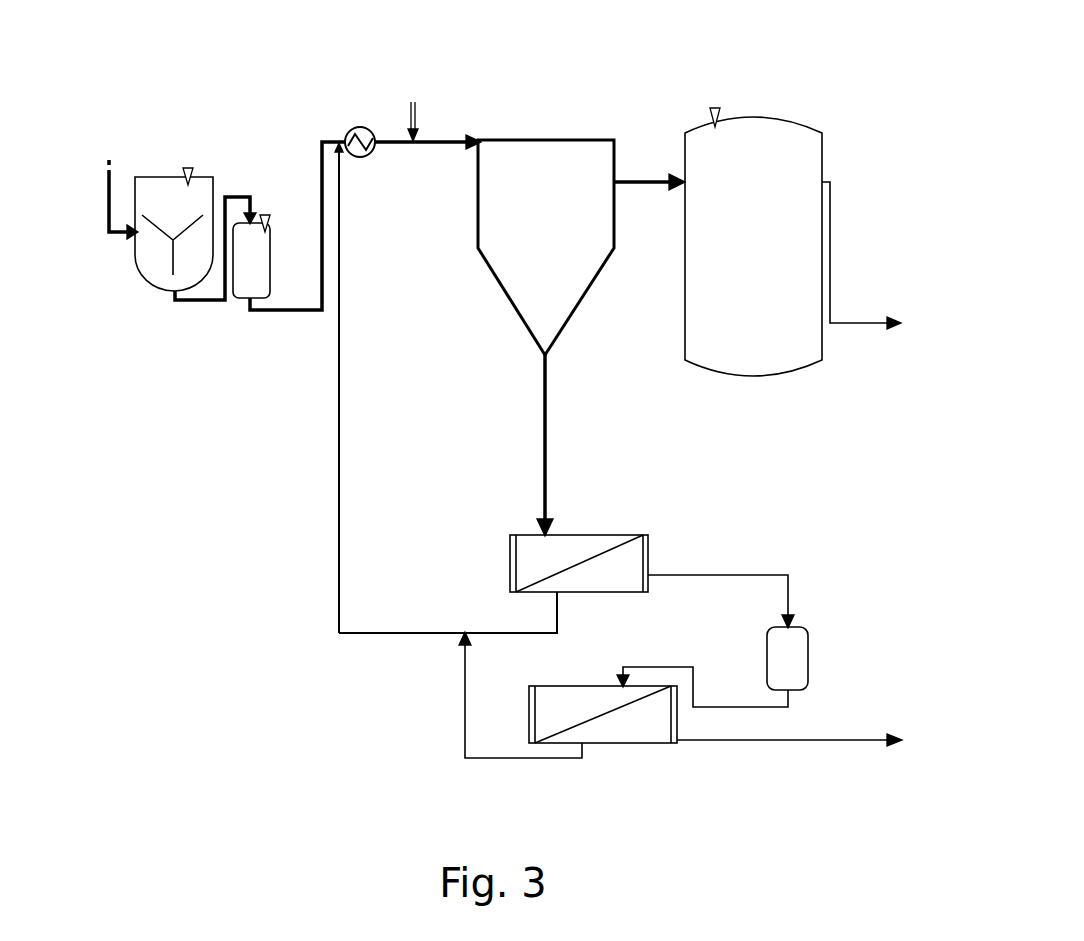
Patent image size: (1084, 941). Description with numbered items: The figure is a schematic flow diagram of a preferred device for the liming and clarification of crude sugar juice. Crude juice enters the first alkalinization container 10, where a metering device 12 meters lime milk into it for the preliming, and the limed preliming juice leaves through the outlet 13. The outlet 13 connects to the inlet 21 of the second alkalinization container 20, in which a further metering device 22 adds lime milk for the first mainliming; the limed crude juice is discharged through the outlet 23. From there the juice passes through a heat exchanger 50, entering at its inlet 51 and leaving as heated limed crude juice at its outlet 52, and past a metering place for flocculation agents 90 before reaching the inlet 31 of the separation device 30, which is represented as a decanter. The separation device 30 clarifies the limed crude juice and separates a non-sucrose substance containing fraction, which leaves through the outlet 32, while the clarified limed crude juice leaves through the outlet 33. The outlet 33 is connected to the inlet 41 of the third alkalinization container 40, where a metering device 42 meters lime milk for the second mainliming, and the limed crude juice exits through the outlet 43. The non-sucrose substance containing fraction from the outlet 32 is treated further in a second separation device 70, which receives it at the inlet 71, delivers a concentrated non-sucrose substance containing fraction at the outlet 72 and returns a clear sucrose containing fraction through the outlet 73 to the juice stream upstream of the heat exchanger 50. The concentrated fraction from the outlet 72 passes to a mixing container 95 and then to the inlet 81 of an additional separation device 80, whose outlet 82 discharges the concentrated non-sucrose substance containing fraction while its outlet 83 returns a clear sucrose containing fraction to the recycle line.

The first alkalinization container 10 is at (160, 190).
The metering device 12 is at (192, 168).
The outlet 13 is at (175, 303).
The second alkalinization container 20 is at (240, 280).
The inlet 21 is at (253, 203).
The metering device 22 is at (265, 215).
The outlet 23 is at (250, 310).
The inlet 31 is at (115, 238).
The heat exchanger 50 is at (362, 127).
The inlet 51 is at (347, 135).
The outlet 52 is at (378, 135).
The metering place for flocculation agents 90 is at (418, 115).
The separation device 30 is at (540, 160).
The outlet 32 is at (542, 365).
The outlet 33 is at (617, 163).
The third alkalinization container 40 is at (782, 155).
The inlet 41 is at (678, 187).
The metering device 42 is at (718, 108).
The outlet 43 is at (832, 180).
The second separation device 70 is at (590, 545).
The inlet 71 is at (548, 512).
The outlet 72 is at (652, 572).
The outlet 73 is at (550, 595).
The additional separation device 80 is at (572, 692).
The inlet 81 is at (628, 668).
The outlet 82 is at (678, 743).
The outlet 83 is at (587, 748).
The mixing container 95 is at (802, 635).